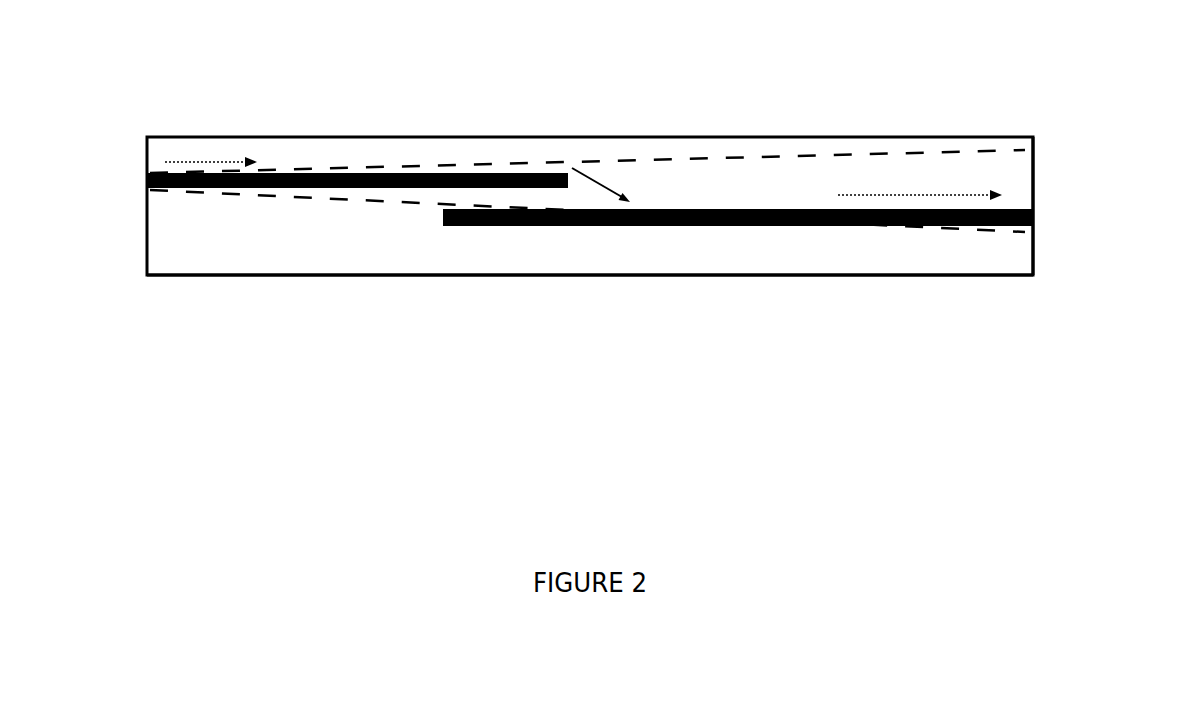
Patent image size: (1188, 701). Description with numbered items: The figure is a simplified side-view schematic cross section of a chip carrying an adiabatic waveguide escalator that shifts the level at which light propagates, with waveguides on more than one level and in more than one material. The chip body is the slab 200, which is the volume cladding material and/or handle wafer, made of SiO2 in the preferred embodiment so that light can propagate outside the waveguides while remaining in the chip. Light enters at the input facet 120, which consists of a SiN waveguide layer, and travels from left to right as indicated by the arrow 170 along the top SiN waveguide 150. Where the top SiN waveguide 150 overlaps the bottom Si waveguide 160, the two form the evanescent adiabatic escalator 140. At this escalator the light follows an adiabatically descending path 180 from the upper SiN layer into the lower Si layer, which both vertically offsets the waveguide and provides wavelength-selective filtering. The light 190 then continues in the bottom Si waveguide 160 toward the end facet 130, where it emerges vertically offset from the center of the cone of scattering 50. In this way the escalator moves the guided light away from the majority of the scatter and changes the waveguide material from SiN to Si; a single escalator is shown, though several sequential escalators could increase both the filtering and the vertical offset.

The cone of scattering 50 is at (658, 150).
The input facet 120 is at (137, 177).
The end facet 130 is at (1042, 217).
The evanescent adiabatic escalator 140 is at (502, 243).
The top SiN waveguide 150 is at (448, 168).
The bottom Si waveguide 160 is at (580, 243).
The arrow indicating light propagation 170 is at (207, 152).
The adiabatically descending path 180 is at (600, 172).
The light 190 is at (915, 188).
The slab 200 is at (230, 248).